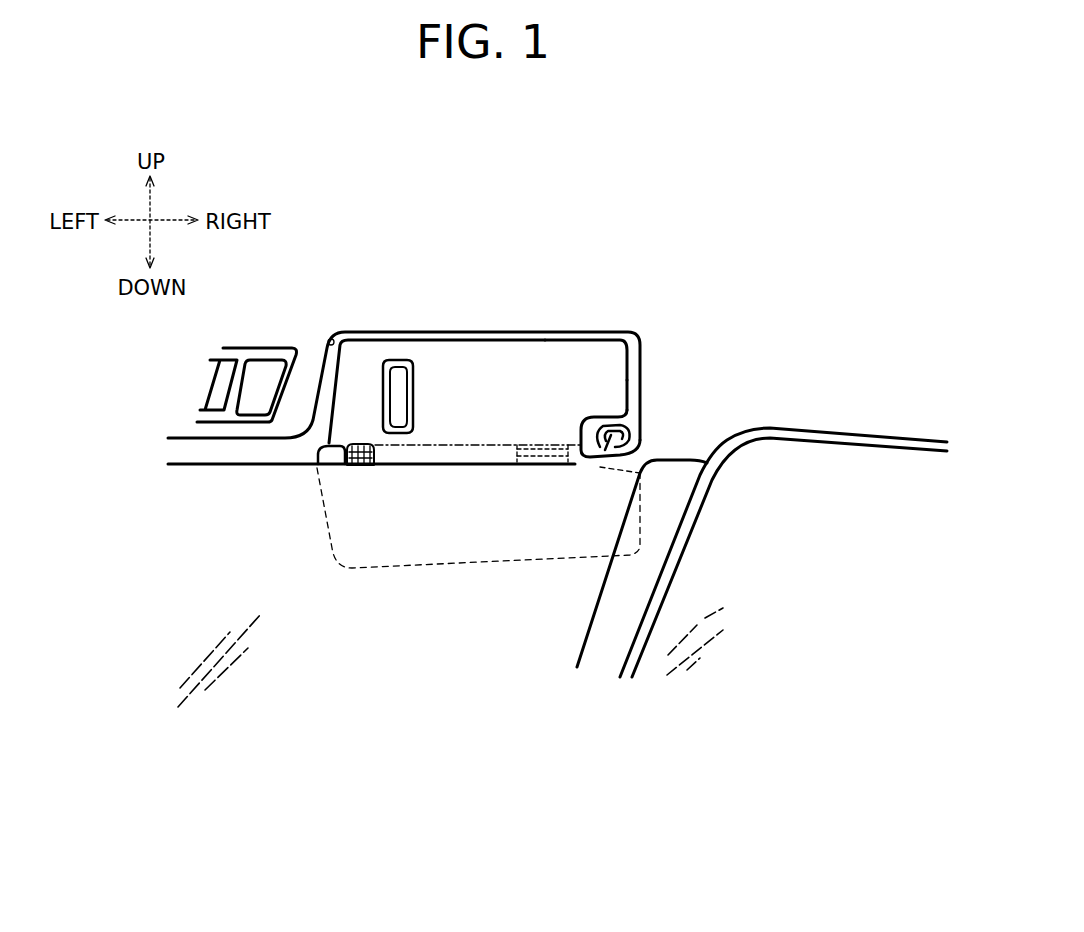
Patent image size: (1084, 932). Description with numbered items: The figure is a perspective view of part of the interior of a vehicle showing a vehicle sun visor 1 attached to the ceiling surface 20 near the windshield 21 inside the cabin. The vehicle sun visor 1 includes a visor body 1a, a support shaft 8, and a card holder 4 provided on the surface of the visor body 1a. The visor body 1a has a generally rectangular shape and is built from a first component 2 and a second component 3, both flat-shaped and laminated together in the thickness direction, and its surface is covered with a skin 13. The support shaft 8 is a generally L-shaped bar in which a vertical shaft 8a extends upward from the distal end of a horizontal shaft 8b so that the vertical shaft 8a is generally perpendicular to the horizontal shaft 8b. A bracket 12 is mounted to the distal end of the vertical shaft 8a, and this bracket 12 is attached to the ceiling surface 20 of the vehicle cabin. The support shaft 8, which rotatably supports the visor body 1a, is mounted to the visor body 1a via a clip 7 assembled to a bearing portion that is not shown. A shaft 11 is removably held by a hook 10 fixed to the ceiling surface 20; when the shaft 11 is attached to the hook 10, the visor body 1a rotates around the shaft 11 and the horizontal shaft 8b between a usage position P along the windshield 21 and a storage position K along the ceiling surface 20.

The vehicle sun visor 1 is at (453, 312).
The visor body 1a is at (328, 343).
The first component 2 is at (562, 363).
The second component 3 is at (593, 353).
The card holder 4 is at (404, 352).
The clip 7 is at (546, 472).
The support shaft 8 is at (578, 472).
The vertical shaft 8a is at (633, 440).
The horizontal shaft 8b is at (526, 462).
The hook 10 is at (354, 444).
The shaft 11 is at (362, 444).
The bracket 12 is at (638, 428).
The skin 13 is at (531, 360).
The ceiling surface 20 is at (633, 261).
The windshield 21 is at (205, 680).
The storage position K is at (478, 383).
The usage position P is at (421, 548).